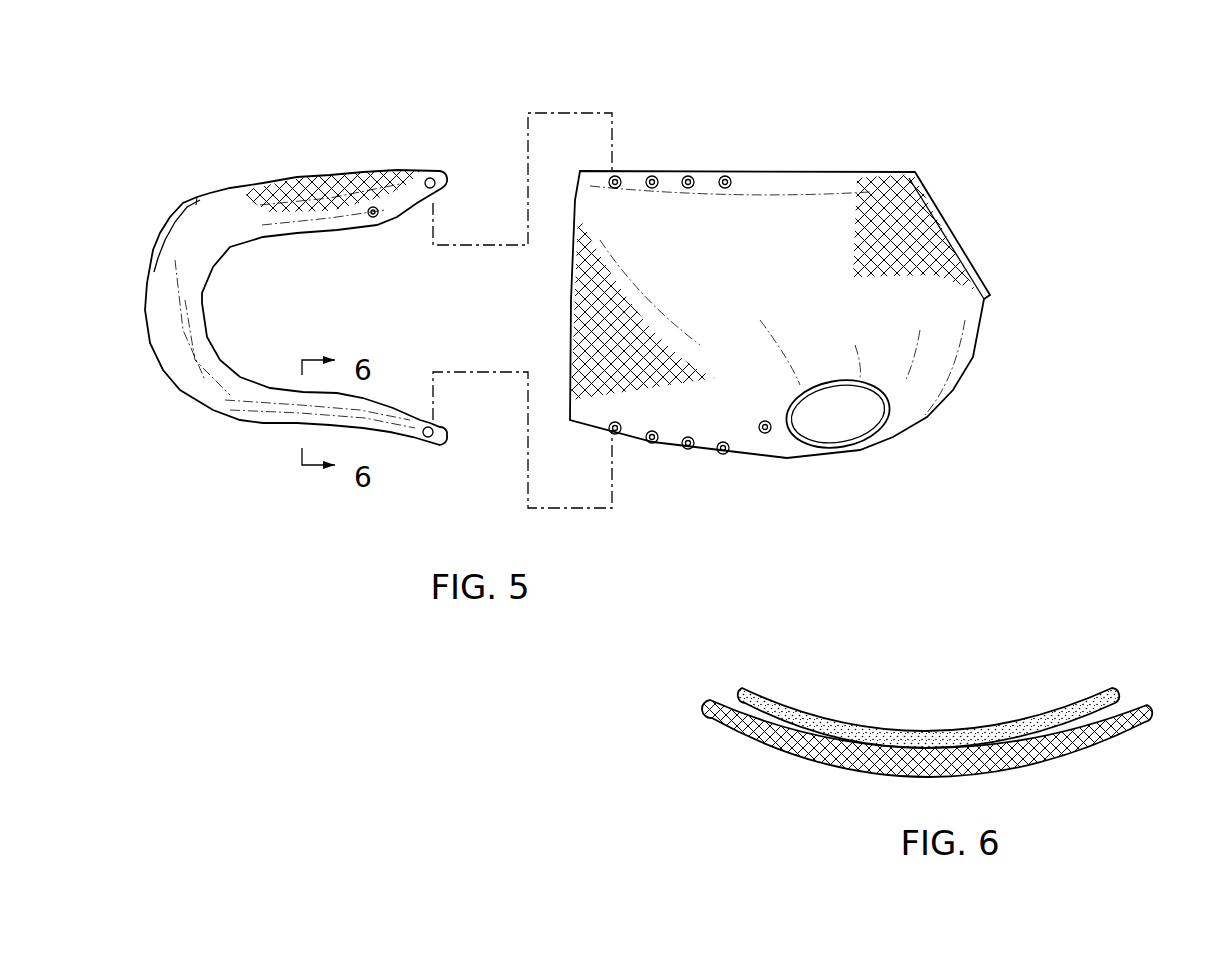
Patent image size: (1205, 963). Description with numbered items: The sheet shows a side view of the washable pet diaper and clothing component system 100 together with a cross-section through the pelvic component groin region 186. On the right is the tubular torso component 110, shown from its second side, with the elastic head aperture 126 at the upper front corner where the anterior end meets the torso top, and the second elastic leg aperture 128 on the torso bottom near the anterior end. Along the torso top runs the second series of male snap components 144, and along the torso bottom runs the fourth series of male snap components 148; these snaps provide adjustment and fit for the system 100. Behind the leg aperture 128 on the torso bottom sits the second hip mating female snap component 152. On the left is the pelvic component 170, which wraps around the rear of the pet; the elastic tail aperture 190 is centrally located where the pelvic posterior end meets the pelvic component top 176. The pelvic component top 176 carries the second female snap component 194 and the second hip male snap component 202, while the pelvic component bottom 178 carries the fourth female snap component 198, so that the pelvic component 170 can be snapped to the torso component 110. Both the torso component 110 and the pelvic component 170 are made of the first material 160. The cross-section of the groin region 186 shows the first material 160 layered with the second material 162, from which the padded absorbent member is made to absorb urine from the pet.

In FIG. 5, the washable pet diaper and clothing component system 100 is at (817, 303).
In FIG. 5, the tubular torso component 110 is at (807, 166).
In FIG. 5, the elastic head aperture 126 is at (945, 233).
In FIG. 5, the elastic leg aperture 128 is at (851, 449).
In FIG. 5, the second series of male snap components 144 is at (725, 175).
In FIG. 5, the fourth series of male snap components 148 is at (652, 445).
In FIG. 5, the second hip mating female snap component 152 is at (765, 434).
In FIG. 5, the pelvic component 170 is at (269, 168).
In FIG. 5, the pelvic component top 176 is at (364, 183).
In FIG. 5, the pelvic component bottom 178 is at (238, 413).
In FIG. 5, the elastic tail aperture 190 is at (180, 212).
In FIG. 5, the second female snap component 194 is at (433, 177).
In FIG. 5, the fourth female snap component 198 is at (428, 438).
In FIG. 5, the second hip male snap component 202 is at (374, 218).
In FIG. 6, the first material 160 is at (817, 760).
In FIG. 6, the second material 162 is at (920, 737).
In FIG. 6, the pelvic component groin region 186 is at (927, 694).